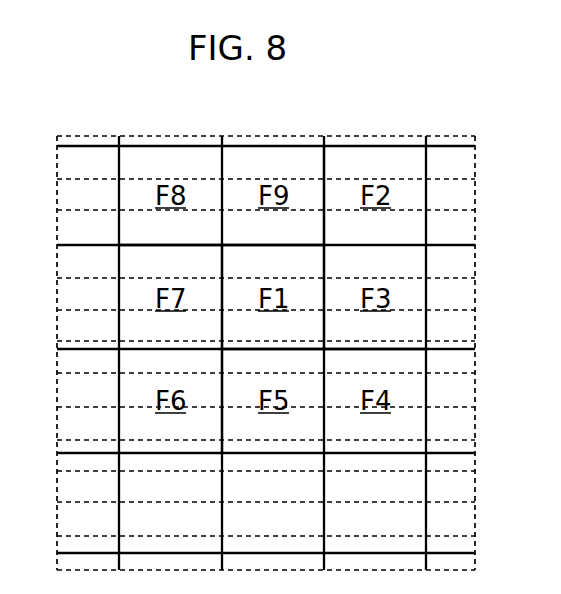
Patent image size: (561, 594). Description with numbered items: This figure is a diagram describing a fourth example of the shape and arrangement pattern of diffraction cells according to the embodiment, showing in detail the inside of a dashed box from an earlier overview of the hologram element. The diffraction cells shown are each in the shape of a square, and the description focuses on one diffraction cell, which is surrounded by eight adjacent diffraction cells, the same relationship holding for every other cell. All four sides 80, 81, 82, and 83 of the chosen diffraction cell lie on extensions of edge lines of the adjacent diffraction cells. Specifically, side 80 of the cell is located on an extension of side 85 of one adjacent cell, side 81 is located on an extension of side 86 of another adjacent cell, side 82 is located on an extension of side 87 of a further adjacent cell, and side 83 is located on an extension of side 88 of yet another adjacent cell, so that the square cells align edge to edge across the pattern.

The side 80 is at (325, 300).
The side 81 is at (280, 349).
The side 82 is at (220, 293).
The side 83 is at (265, 245).
The side 85 is at (325, 190).
The side 86 is at (392, 350).
The side 87 is at (220, 418).
The side 88 is at (150, 247).